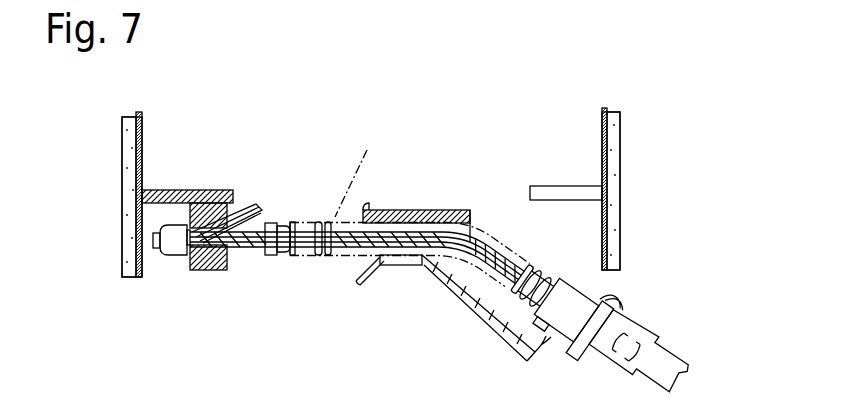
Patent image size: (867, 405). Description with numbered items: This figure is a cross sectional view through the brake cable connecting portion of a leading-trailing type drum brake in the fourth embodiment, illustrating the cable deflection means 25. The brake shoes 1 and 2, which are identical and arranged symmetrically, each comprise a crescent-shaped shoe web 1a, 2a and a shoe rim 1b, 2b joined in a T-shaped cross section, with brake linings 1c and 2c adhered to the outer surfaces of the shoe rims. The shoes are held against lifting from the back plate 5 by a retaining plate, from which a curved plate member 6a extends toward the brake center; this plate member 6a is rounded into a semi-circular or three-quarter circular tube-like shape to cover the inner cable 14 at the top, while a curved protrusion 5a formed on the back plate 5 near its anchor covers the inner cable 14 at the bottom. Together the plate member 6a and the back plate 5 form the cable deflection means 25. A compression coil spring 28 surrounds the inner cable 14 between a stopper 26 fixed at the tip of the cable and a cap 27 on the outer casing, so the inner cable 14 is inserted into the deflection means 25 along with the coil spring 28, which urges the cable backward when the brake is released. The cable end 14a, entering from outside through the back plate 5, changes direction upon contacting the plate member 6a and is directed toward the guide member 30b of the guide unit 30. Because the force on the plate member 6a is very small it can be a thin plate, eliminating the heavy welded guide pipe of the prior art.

The brake shoe 1 is at (620, 218).
The shoe web 1a is at (551, 187).
The shoe rim 1b is at (603, 109).
The brake lining 1c is at (621, 128).
The brake shoe 2 is at (122, 228).
The shoe web 2a is at (172, 190).
The shoe rim 2b is at (140, 122).
The brake lining 2c is at (122, 139).
The back plate 5 is at (538, 357).
The curved protrusion 5a is at (421, 268).
The curved plate member 6a is at (426, 210).
The inner cable 14 is at (333, 256).
The cable end 14a is at (175, 258).
The cable deflection means 25 is at (481, 218).
The stopper 26 is at (271, 254).
The cap 27 is at (622, 292).
The coil spring 28 is at (362, 166).
The guide unit 30 is at (257, 210).
The guide member 30b is at (265, 216).